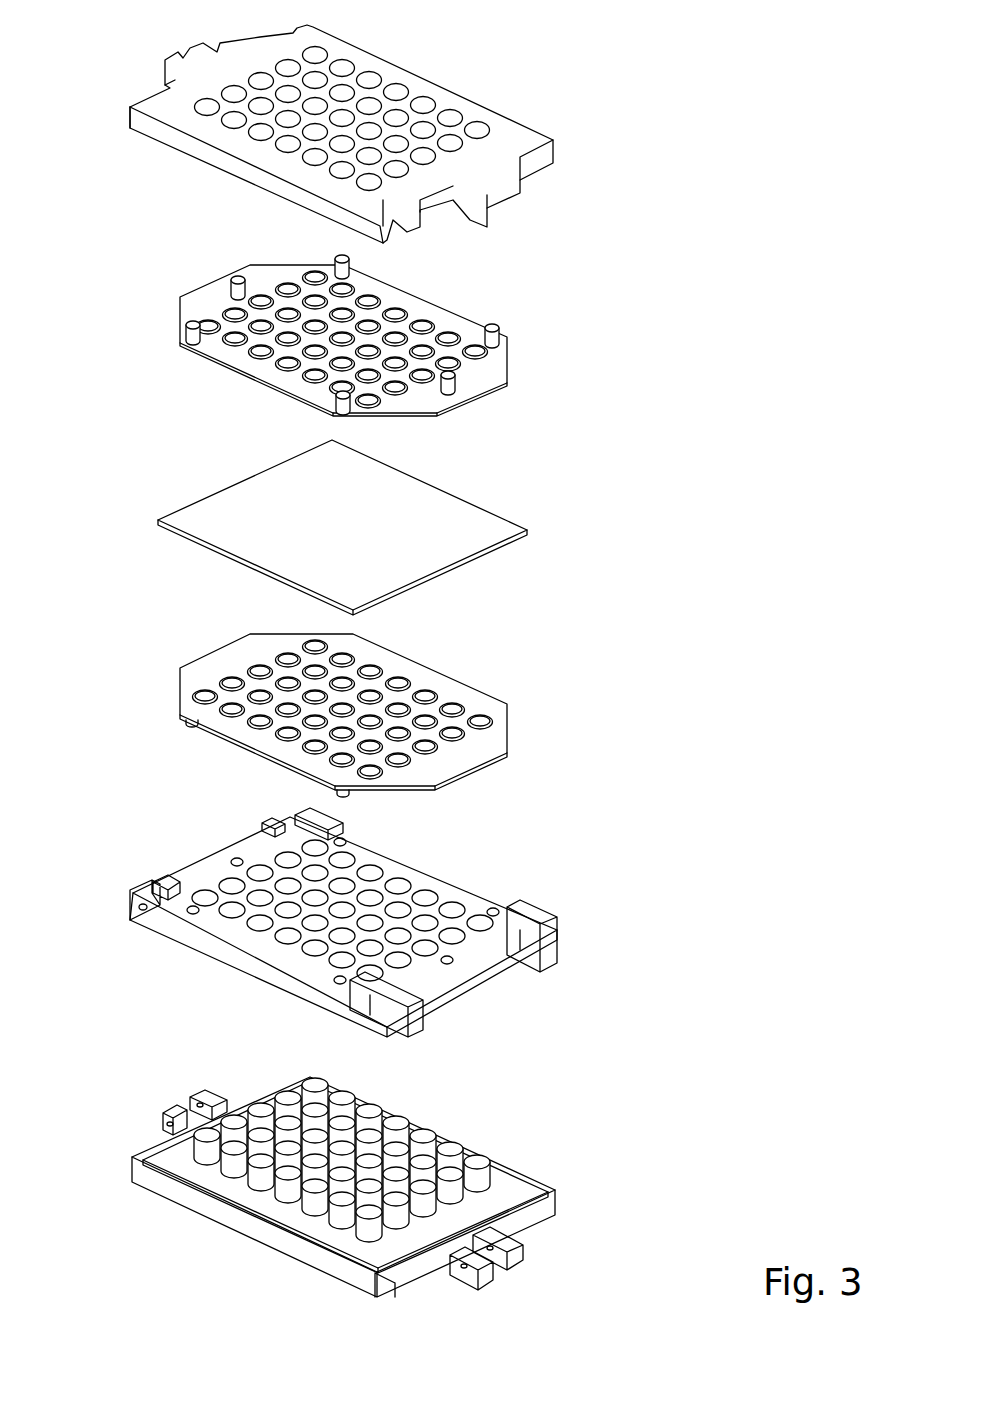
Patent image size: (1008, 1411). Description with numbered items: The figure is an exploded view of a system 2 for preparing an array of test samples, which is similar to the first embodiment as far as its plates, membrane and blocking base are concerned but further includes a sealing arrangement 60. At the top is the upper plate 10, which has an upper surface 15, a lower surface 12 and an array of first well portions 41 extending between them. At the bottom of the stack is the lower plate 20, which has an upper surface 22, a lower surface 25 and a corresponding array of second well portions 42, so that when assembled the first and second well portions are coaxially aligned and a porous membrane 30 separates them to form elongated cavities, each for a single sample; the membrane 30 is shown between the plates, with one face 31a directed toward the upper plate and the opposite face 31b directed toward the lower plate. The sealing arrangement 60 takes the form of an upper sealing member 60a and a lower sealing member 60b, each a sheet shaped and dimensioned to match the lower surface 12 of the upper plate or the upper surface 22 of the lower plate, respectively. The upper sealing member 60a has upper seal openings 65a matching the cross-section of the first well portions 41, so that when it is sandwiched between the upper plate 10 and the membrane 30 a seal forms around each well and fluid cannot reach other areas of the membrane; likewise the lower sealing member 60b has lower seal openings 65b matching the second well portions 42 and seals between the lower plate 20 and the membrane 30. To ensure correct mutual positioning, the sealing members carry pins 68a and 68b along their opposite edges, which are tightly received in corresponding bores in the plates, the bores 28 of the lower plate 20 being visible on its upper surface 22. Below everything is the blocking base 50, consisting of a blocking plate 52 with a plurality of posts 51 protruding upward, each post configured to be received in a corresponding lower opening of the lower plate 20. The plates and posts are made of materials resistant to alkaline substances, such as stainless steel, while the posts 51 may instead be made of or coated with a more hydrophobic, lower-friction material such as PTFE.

The system 2 is at (752, 80).
The upper plate 10 is at (387, 129).
The lower surface of the upper plate 12 is at (237, 178).
The upper surface of the upper plate 15 is at (505, 125).
The first well portions 41 is at (370, 80).
The sealing arrangement 60 is at (441, 534).
The upper sealing member 60a is at (401, 331).
The upper seal openings 65a is at (370, 305).
The pins of the upper sealing member 68a is at (490, 318).
The membrane 30 is at (357, 527).
The membrane top surface 31a is at (213, 512).
The membrane bottom surface 31b is at (223, 555).
The lower sealing member 60b is at (375, 728).
The lower seal openings 65b is at (400, 685).
The pins of the lower sealing member 68b is at (192, 724).
The lower plate 20 is at (362, 921).
The upper surface of the lower plate 22 is at (195, 872).
The lower surface of the lower plate 25 is at (277, 987).
The bores 28 is at (237, 858).
The second well portions 42 is at (397, 883).
The blocking plate 50 is at (374, 1187).
The posts 51 is at (168, 1153).
The blocking plate 52 is at (140, 1192).